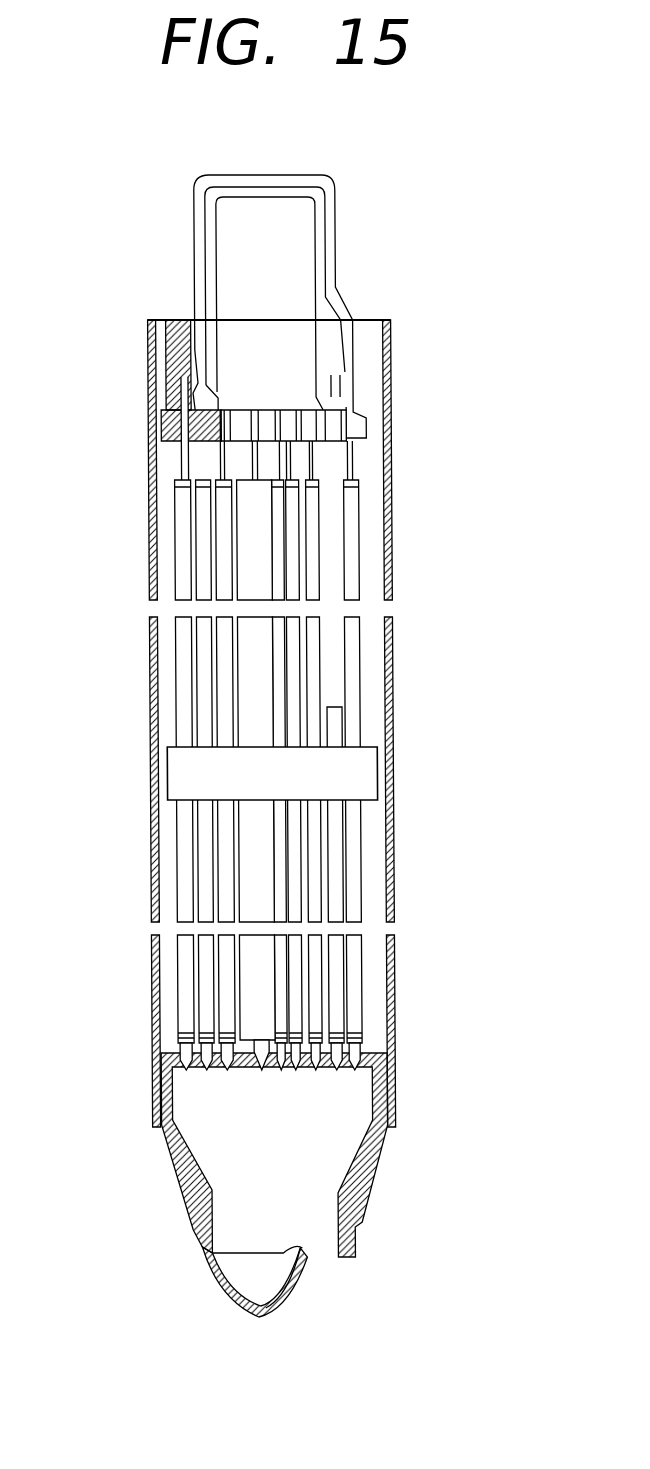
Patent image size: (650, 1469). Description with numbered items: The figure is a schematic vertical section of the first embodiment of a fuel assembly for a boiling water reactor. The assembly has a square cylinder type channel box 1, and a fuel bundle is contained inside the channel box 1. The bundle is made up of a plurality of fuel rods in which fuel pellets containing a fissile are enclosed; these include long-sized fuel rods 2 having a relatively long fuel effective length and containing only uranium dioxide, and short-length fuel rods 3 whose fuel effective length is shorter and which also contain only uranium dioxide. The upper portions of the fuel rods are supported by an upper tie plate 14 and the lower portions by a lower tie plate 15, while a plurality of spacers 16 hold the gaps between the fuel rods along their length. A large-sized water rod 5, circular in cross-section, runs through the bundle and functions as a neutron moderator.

The channel box 1 is at (392, 708).
The fuel rod 2 is at (352, 557).
The short-length fuel rod 3 is at (347, 893).
The large-sized water rod 5 is at (247, 673).
The upper tie plate 14 is at (352, 378).
The lower tie plate 15 is at (378, 1170).
The spacer 16 is at (357, 775).